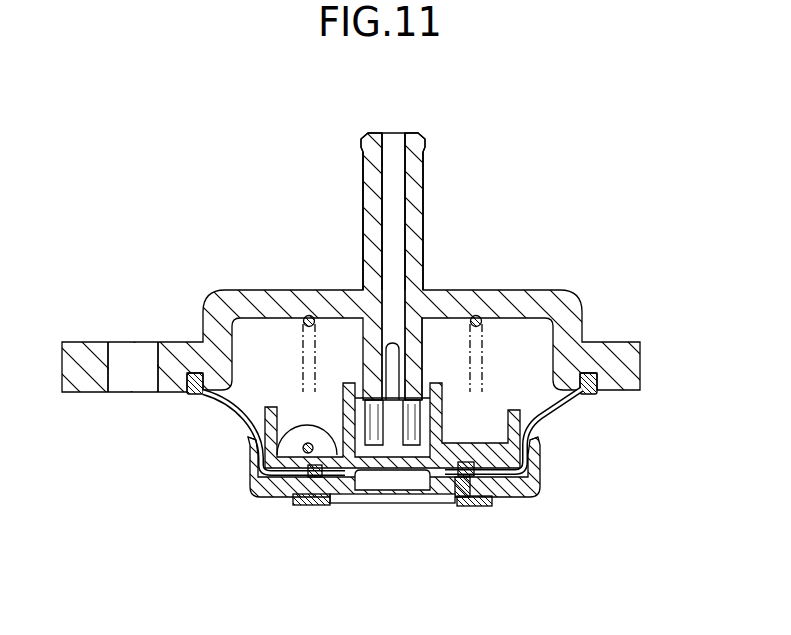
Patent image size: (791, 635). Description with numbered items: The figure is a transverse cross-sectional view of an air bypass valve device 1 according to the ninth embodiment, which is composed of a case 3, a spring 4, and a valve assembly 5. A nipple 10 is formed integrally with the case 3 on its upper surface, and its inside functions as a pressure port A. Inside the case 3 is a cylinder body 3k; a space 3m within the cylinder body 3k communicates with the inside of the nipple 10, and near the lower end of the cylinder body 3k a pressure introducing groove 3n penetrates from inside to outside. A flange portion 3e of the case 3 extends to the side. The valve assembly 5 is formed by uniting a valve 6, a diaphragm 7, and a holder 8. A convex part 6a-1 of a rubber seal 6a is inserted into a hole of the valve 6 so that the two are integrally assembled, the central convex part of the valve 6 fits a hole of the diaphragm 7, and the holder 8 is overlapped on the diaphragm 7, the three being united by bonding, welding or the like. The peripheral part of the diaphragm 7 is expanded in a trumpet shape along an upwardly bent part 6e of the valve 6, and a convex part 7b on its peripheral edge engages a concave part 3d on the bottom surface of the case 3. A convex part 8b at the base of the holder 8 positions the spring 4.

The air bypass valve device 1 is at (262, 262).
The case 3 is at (570, 303).
The concave part 3d is at (194, 372).
The flange portion 3e is at (130, 362).
The cylinder body 3k is at (430, 350).
The space 3m is at (357, 291).
The pressure introducing groove 3n is at (423, 293).
The spring 4 is at (490, 350).
The valve assembly 5 is at (383, 459).
The valve 6 is at (360, 506).
The rubber seal 6a is at (415, 503).
The convex part 6a-1 is at (472, 506).
The upwardly bent part 6e is at (250, 450).
The diaphragm 7 is at (358, 411).
The convex part 7b is at (197, 397).
The holder 8 is at (389, 461).
The convex part 8b is at (298, 453).
The nipple 10 is at (423, 198).
The pressure port A is at (393, 148).